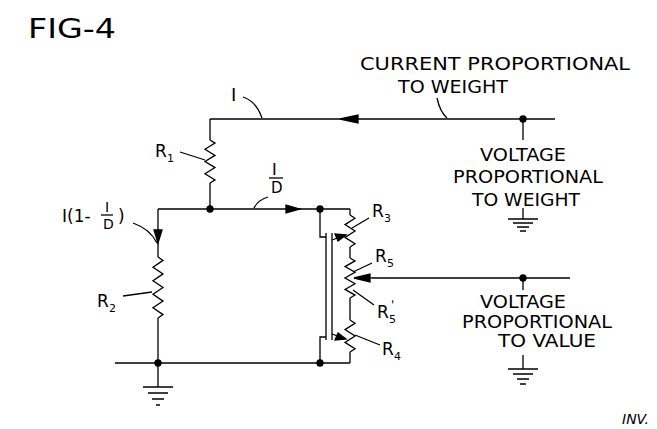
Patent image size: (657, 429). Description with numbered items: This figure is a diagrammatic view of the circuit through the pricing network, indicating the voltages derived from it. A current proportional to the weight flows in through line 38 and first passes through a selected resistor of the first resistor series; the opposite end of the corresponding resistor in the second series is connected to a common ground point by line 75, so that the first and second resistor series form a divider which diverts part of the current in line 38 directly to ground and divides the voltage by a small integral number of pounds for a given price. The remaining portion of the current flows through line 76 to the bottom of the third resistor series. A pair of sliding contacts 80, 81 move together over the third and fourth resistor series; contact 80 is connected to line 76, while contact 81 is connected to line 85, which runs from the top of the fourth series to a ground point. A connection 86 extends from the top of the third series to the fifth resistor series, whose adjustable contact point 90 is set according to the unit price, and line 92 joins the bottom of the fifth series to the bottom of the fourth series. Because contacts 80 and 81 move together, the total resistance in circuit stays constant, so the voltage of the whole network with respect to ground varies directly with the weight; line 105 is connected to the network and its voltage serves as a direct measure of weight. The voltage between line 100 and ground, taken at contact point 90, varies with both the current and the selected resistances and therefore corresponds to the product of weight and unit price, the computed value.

The line 38 is at (299, 118).
The line 75 is at (157, 342).
The line 76 is at (307, 208).
The sliding contact 80 is at (326, 255).
The sliding contact 81 is at (326, 322).
The line 85 is at (320, 352).
The connection 86 is at (353, 257).
The adjustable contact point 90 is at (357, 279).
The line 92 is at (353, 310).
The line 100 is at (452, 277).
The line 105 is at (525, 124).